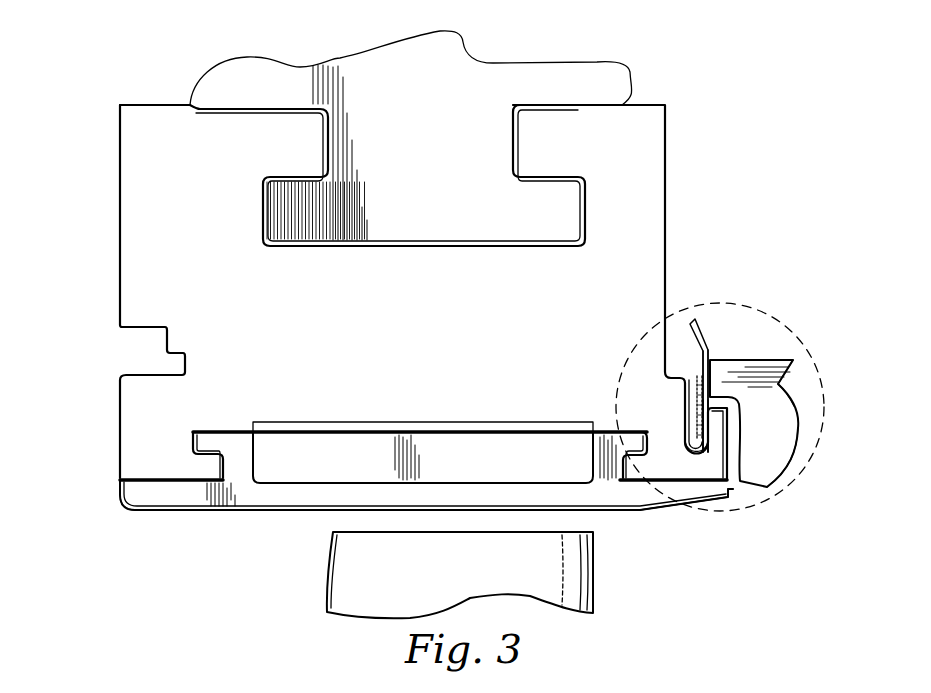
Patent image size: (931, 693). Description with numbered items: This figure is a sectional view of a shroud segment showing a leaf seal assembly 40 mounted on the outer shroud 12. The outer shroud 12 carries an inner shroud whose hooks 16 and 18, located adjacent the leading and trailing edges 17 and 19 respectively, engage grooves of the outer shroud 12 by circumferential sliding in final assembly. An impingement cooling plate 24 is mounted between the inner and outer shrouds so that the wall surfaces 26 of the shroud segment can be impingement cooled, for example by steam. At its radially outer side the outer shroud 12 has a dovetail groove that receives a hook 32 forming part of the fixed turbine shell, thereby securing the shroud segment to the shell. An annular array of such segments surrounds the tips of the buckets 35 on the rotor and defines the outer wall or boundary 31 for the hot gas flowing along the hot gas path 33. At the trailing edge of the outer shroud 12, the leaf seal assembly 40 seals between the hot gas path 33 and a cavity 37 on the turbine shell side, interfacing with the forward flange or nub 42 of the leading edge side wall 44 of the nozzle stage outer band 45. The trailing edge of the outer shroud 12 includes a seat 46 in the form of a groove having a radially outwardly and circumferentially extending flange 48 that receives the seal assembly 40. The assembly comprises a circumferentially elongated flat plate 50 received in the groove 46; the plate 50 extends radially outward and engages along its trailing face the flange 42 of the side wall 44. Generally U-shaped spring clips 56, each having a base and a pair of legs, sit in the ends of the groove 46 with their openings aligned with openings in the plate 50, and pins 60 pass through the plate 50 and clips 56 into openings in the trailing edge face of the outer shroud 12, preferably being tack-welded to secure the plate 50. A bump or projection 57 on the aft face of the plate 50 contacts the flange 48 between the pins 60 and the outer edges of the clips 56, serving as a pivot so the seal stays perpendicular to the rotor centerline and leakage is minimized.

The outer shroud 12 is at (160, 252).
The hook 16 is at (212, 443).
The leading edge 17 is at (118, 486).
The hook 18 is at (633, 418).
The trailing edge 19 is at (728, 490).
The impingement cooling plate 24 is at (330, 430).
The wall surfaces 26 is at (297, 493).
The outer wall or boundary 31 is at (488, 513).
The hook 32 is at (453, 217).
The hot gas path 33 is at (126, 574).
The buckets 35 is at (357, 567).
The cavity 37 is at (716, 188).
The leaf seal assembly 40 is at (716, 322).
The forward flange or nub 42 is at (723, 367).
The leading edge side wall 44 is at (783, 451).
The nozzle stage outer band 45 is at (782, 393).
The seat 46 is at (701, 458).
The flange 48 is at (717, 432).
The flat plate 50 is at (698, 372).
The spring clips 56 is at (703, 362).
The bump or projection 57 is at (710, 417).
The pins 60 is at (690, 414).